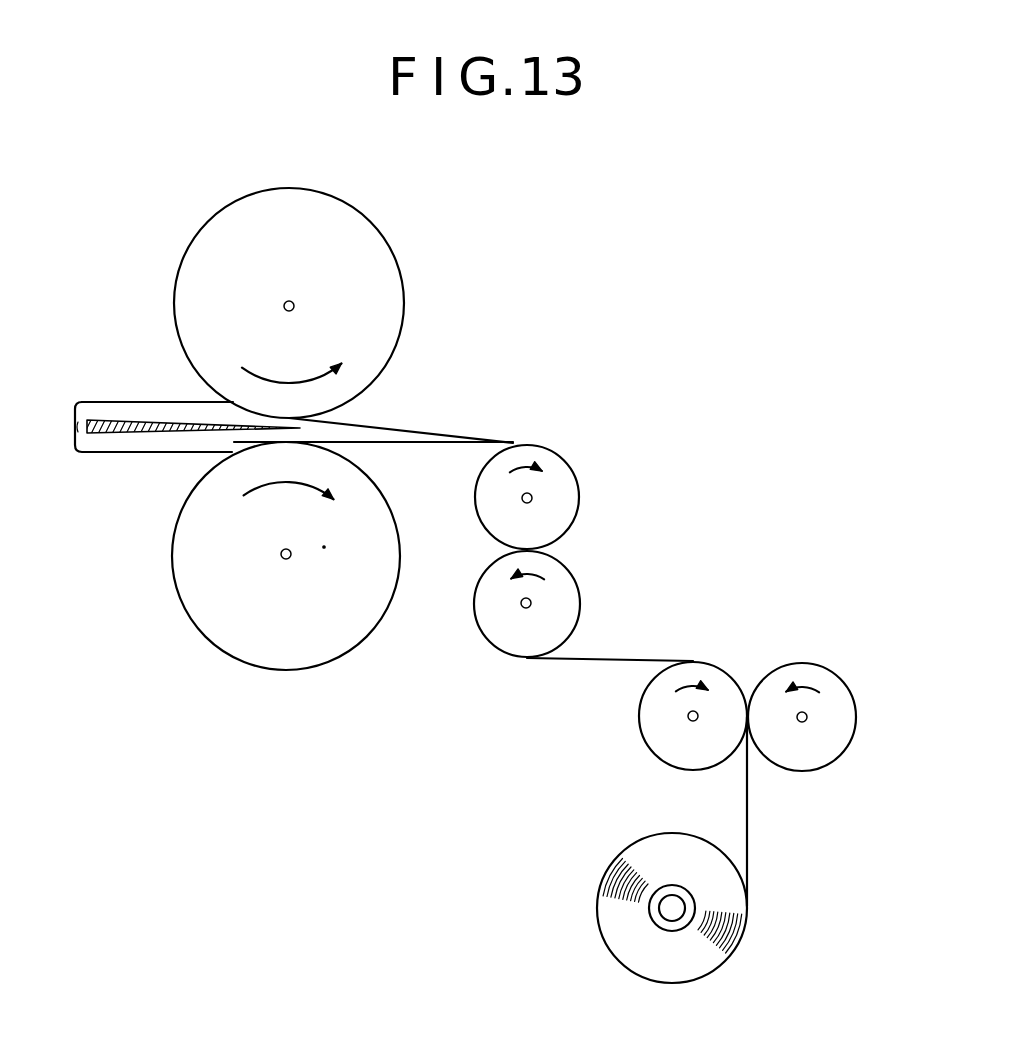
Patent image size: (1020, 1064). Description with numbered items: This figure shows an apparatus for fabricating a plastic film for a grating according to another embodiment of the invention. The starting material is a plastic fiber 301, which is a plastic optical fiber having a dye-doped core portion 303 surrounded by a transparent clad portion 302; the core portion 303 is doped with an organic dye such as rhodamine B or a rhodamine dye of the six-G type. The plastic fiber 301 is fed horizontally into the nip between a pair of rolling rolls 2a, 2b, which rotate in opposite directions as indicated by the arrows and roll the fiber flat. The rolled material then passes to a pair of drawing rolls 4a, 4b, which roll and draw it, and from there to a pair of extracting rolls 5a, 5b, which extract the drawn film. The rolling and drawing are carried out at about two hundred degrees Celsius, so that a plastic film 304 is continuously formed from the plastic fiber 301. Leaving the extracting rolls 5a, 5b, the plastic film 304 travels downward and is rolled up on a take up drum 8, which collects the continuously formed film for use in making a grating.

The rolling roll 2a is at (375, 275).
The rolling roll 2b is at (243, 640).
The plastic fiber 301 is at (93, 400).
The clad portion 302 is at (137, 413).
The core portion 303 is at (110, 437).
The plastic film 304 is at (455, 434).
The drawing roll 4a is at (568, 492).
The drawing roll 4b is at (500, 633).
The extracting roll 5a is at (665, 743).
The extracting roll 5b is at (840, 703).
The take up drum 8 is at (661, 930).